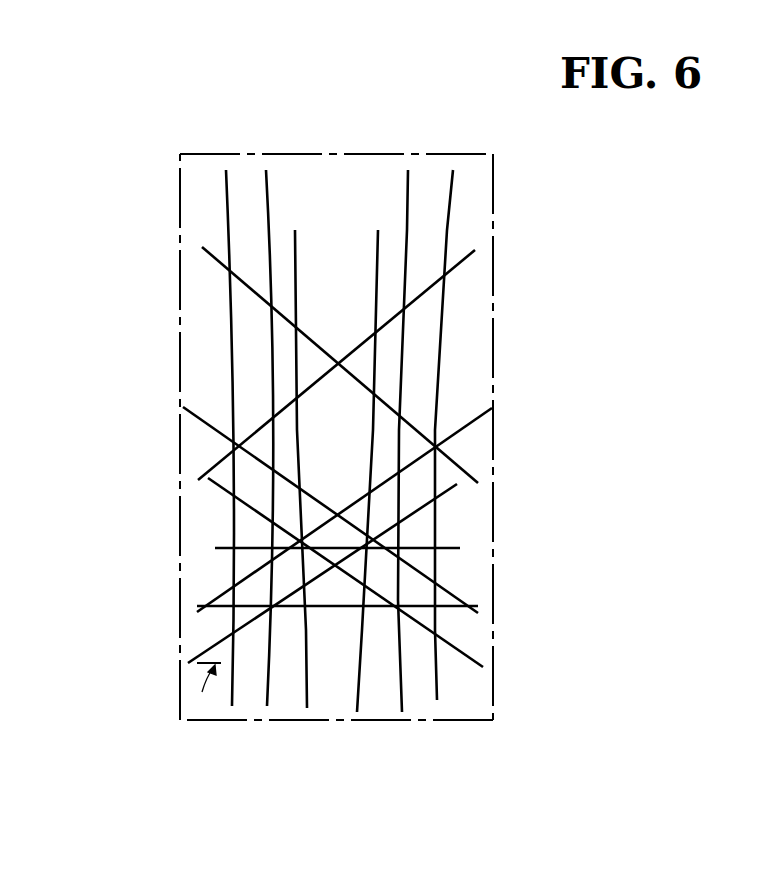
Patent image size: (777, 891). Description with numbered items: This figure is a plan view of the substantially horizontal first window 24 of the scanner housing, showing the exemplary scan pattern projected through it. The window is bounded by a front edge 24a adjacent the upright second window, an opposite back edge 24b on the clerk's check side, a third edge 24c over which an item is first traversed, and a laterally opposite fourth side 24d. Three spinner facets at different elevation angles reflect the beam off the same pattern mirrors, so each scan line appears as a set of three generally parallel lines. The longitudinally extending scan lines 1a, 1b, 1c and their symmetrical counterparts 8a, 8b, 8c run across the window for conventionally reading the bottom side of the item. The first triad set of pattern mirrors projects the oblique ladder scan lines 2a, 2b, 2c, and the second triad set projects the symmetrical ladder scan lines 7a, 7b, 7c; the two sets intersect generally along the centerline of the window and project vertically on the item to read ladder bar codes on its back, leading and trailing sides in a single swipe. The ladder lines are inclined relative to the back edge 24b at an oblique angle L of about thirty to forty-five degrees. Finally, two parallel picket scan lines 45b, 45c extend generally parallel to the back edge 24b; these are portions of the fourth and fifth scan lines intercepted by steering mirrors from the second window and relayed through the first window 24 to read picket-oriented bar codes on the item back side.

The first window 24 is at (335, 407).
The front edge 24a is at (433, 153).
The back edge 24b is at (478, 721).
The third edge 24c is at (495, 196).
The fourth side 24d is at (180, 202).
The scan line 1a is at (357, 702).
The scan line 1b is at (267, 706).
The scan line 1c is at (232, 706).
The scan line 8a is at (307, 708).
The scan line 8b is at (402, 702).
The scan line 8c is at (438, 686).
The ladder scan line 7a is at (214, 258).
The ladder scan line 7b is at (208, 425).
The ladder scan line 7c is at (208, 480).
The ladder scan line 2a is at (476, 252).
The ladder scan line 2b is at (470, 425).
The ladder scan line 2c is at (455, 488).
The steered picket scan line 45b is at (450, 548).
The steered picket scan line 45c is at (473, 605).
The oblique angle L is at (210, 647).